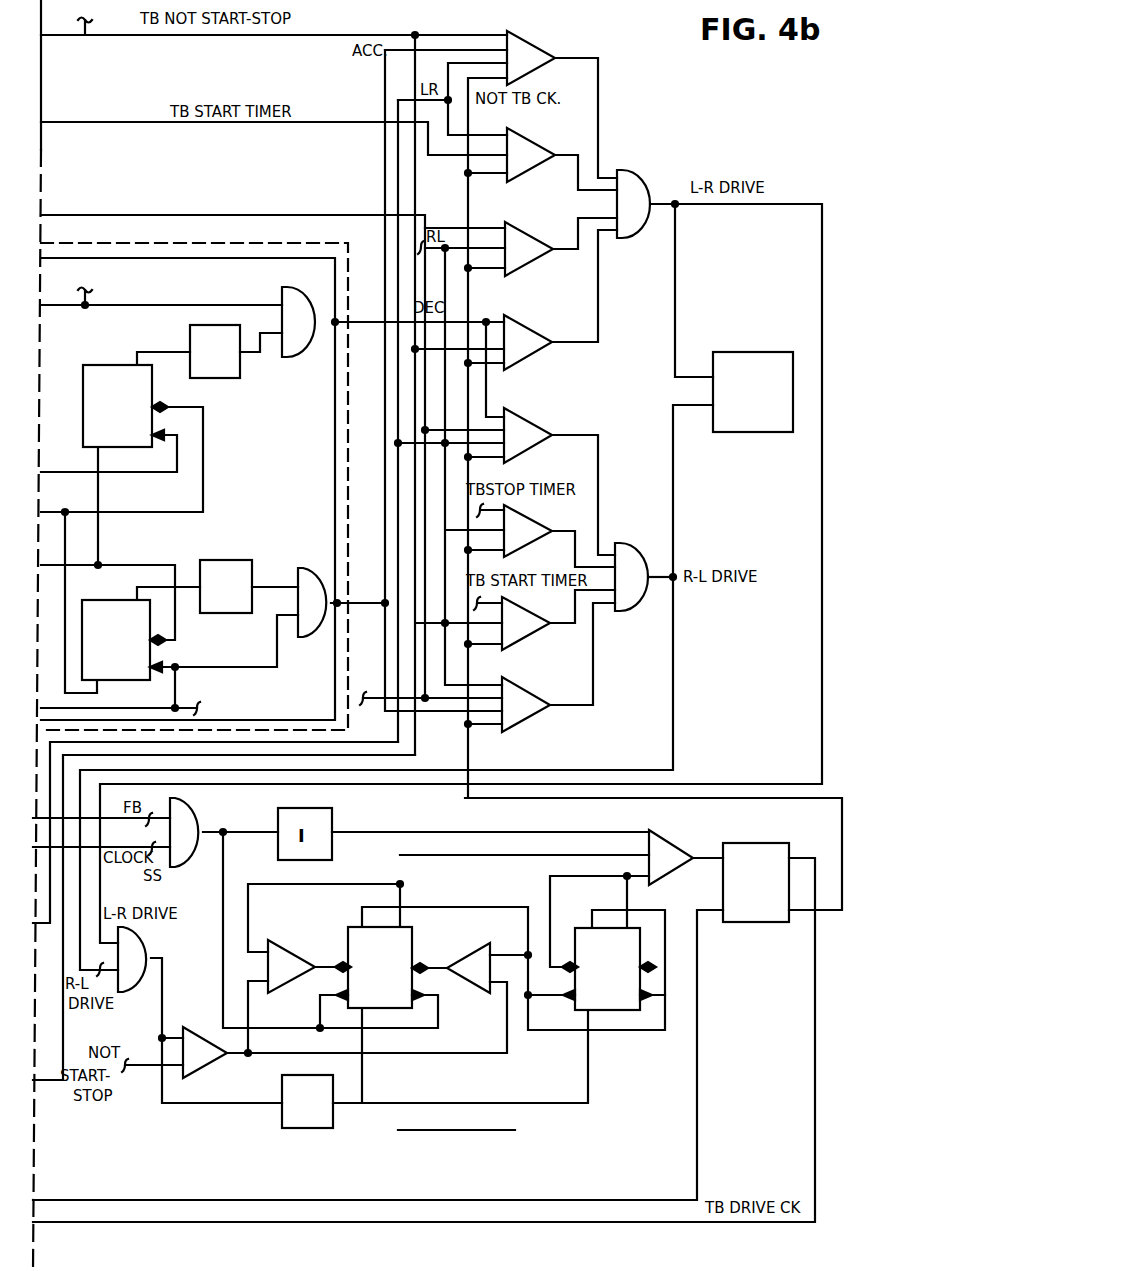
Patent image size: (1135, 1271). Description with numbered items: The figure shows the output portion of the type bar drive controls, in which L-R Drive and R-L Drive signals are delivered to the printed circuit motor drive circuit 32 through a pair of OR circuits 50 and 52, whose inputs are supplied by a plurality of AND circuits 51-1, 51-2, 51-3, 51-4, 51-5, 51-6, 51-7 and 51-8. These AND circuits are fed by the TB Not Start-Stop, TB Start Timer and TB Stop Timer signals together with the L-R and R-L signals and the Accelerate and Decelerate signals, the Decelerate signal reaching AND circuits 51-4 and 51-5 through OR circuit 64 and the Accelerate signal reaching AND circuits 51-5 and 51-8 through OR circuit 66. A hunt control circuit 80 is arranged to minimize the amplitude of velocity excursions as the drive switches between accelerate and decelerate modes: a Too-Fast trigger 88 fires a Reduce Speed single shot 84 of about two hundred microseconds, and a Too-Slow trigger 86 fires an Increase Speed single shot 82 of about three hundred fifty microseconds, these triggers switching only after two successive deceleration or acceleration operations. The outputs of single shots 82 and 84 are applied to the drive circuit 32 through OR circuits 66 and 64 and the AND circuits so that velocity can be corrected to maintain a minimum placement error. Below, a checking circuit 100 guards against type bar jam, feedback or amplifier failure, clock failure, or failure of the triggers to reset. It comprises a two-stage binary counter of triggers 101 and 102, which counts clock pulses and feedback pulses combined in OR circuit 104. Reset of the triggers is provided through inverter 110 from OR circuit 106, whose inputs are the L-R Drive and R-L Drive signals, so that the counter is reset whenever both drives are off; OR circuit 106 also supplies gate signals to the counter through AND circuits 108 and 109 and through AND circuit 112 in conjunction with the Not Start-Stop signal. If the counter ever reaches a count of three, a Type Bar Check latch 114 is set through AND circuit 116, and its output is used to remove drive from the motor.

The printed circuit motor drive circuit 32 is at (770, 352).
The OR circuit 50 is at (642, 185).
The AND circuit 51-1 is at (562, 103).
The AND circuit 51-2 is at (562, 156).
The AND circuit 51-3 is at (561, 246).
The AND circuit 51-4 is at (560, 300).
The AND circuit 51-5 is at (559, 478).
The AND circuit 51-6 is at (559, 532).
The AND circuit 51-7 is at (558, 620).
The AND circuit 51-8 is at (558, 667).
The OR circuit 52 is at (636, 600).
The OR circuit 64 is at (292, 350).
The OR circuit 66 is at (305, 636).
The hunt control circuit 80 is at (280, 470).
The Increase Speed single shot 82 is at (240, 612).
The Reduce Speed single shot 84 is at (238, 376).
The Too-Slow trigger 86 is at (104, 600).
The Too-Fast trigger 88 is at (94, 364).
The checking circuit 100 is at (458, 1121).
The trigger 101 is at (410, 930).
The trigger 102 is at (588, 926).
The OR circuit 104 is at (197, 822).
The OR circuit 106 is at (150, 950).
The AND circuit 108 is at (290, 958).
The AND circuit 109 is at (482, 988).
The inverter 110 is at (296, 1128).
The AND circuit 112 is at (202, 1066).
The Type Bar Check latch 114 is at (755, 844).
The AND circuit 116 is at (665, 840).